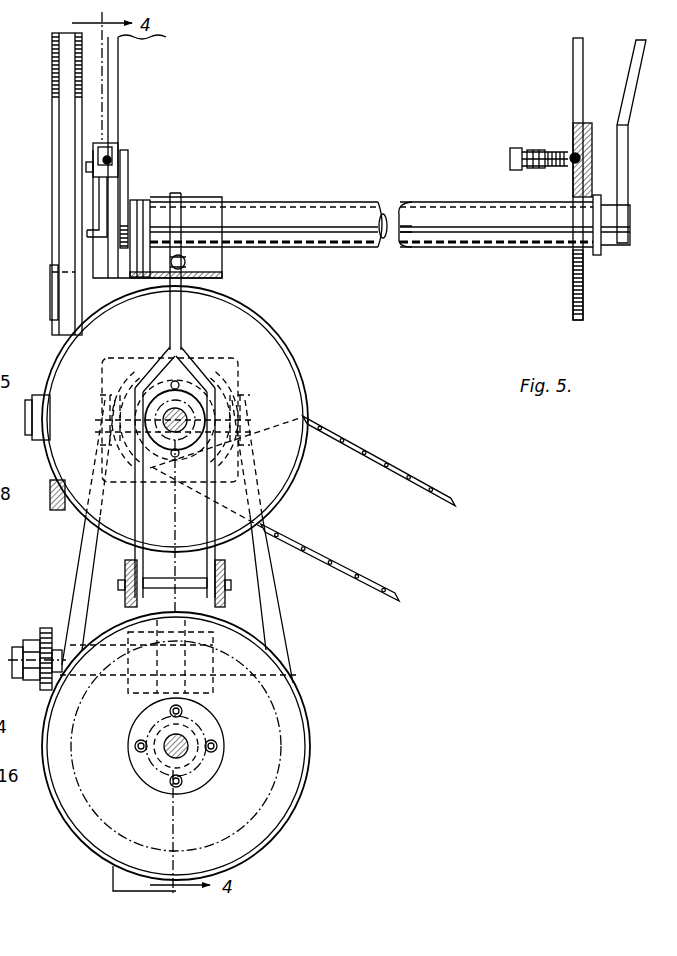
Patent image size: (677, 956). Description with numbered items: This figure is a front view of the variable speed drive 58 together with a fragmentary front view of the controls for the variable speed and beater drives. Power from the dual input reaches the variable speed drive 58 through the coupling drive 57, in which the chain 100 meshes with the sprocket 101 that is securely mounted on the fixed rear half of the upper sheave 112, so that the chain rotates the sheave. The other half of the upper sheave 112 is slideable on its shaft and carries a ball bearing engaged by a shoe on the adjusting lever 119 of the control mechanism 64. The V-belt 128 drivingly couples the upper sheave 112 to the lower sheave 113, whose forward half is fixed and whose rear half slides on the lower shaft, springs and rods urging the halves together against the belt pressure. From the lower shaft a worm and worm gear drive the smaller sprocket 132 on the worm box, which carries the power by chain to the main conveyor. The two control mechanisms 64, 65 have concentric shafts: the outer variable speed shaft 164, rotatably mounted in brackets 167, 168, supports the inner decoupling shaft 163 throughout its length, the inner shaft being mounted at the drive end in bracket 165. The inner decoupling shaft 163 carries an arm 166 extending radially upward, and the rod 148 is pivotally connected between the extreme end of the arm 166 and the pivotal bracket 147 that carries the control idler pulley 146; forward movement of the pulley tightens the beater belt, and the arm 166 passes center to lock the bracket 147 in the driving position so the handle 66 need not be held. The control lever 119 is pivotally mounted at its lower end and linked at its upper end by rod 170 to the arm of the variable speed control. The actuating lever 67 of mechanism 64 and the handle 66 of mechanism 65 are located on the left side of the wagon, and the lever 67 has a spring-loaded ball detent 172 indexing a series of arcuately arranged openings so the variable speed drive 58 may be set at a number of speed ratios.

The coupling drive 57 is at (399, 452).
The variable speed drive 58 is at (292, 629).
The control mechanism 64 is at (406, 251).
The control mechanism 65 is at (407, 190).
The handle 66 is at (628, 172).
The handle 67 is at (573, 60).
The chain 100 is at (338, 562).
The sprocket 101 is at (250, 446).
The upper sheave 112 is at (248, 340).
The lower sheave 113 is at (278, 745).
The adjusting lever 119 is at (200, 284).
The V-belt 128 is at (272, 607).
The sprocket 132 is at (48, 628).
The control idler pulley 146 is at (50, 290).
The bracket 147 is at (93, 148).
The rod 148 is at (102, 195).
The inner decoupling shaft 163 is at (384, 246).
The outer variable speed shaft 164 is at (305, 202).
The bracket 165 is at (140, 200).
The arm 166 is at (128, 165).
The bracket 167 is at (168, 200).
The bracket 168 is at (578, 242).
The rod 170 is at (190, 262).
The spring-loaded ball detent 172 is at (565, 150).